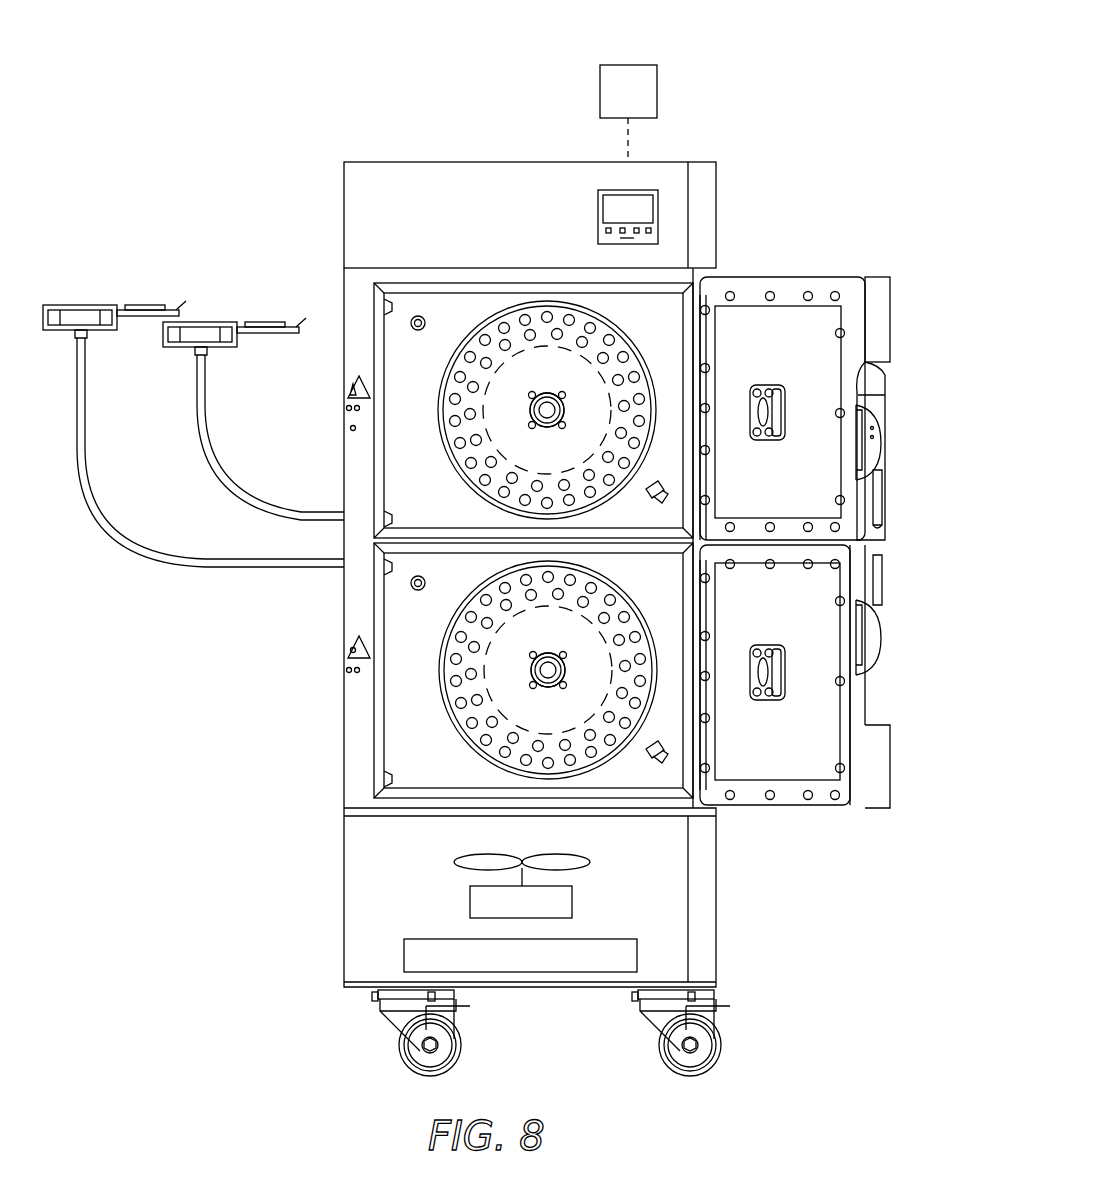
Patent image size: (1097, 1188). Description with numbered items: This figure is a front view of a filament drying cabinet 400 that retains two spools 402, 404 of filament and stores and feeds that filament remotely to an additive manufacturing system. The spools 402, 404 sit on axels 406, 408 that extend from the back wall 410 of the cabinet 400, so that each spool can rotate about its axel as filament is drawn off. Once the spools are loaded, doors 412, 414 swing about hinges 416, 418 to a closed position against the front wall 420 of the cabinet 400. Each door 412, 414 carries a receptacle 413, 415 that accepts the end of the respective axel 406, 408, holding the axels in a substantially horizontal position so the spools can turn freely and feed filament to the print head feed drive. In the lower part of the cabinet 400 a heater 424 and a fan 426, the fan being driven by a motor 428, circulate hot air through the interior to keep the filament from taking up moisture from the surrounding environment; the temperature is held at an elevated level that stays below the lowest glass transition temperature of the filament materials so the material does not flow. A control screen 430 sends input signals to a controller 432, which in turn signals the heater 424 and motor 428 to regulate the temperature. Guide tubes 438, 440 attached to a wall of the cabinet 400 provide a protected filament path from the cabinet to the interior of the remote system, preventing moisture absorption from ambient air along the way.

The filament drying cabinet 400 is at (170, 96).
The spool 402 is at (455, 653).
The spool 404 is at (458, 388).
The axel 406 is at (550, 675).
The axel 408 is at (547, 410).
The back wall 410 is at (410, 432).
The door 412 is at (868, 595).
The receptacle 413 is at (770, 672).
The door 414 is at (862, 470).
The receptacle 415 is at (768, 412).
The hinge 416 is at (706, 728).
The hinge 418 is at (706, 344).
The front wall 420 is at (366, 306).
The heater 424 is at (541, 972).
The fan 426 is at (468, 862).
The motor 428 is at (468, 900).
The control screen 430 is at (608, 198).
The controller 432 is at (633, 65).
The guide tube 438 is at (85, 378).
The guide tube 440 is at (203, 420).